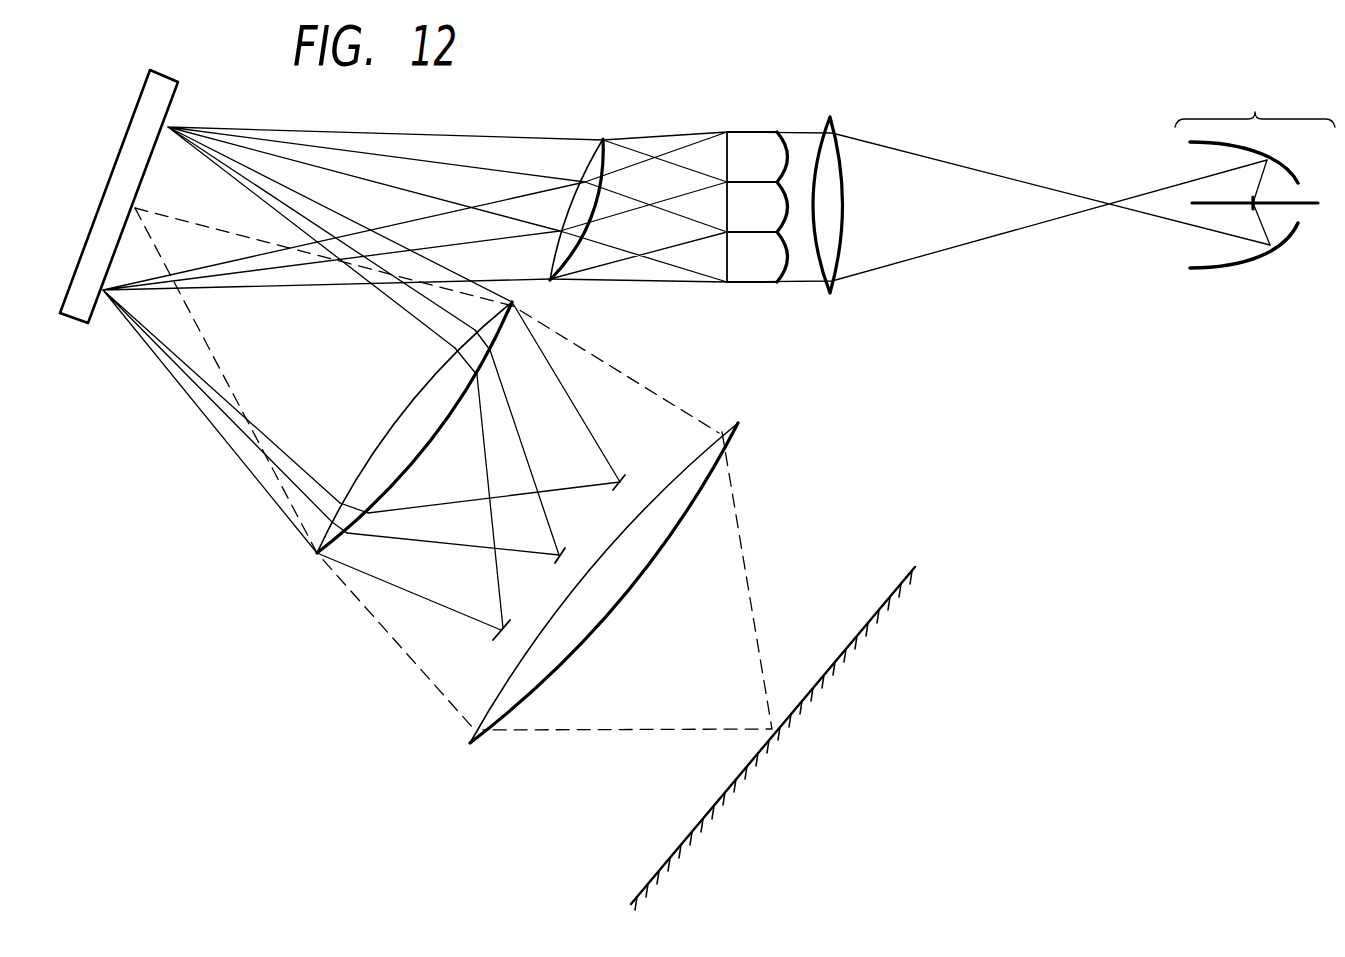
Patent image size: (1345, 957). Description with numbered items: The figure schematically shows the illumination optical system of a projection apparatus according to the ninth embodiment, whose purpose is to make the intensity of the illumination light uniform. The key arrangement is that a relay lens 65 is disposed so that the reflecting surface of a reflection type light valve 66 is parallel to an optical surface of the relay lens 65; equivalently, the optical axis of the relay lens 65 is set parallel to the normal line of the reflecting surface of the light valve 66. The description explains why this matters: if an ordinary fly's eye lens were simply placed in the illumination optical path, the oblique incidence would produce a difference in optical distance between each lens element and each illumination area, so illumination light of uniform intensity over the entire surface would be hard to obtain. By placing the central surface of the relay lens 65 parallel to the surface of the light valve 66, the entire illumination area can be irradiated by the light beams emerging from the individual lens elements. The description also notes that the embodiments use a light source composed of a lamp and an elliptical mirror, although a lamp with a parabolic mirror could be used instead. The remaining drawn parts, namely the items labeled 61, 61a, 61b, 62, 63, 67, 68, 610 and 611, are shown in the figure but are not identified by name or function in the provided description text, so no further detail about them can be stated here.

The light source 61 is at (1230, 204).
The reflector 61a is at (1203, 206).
The lamp electrode 61b is at (1245, 260).
The condenser lens 62 is at (828, 122).
The lens array 63 is at (750, 130).
The relay lens 65 is at (603, 138).
The reflection type light valve 66 is at (136, 148).
The projection lens 67 is at (527, 687).
The screen 68 is at (889, 584).
The relay lens 610 is at (318, 553).
The image positions 611 is at (495, 630).